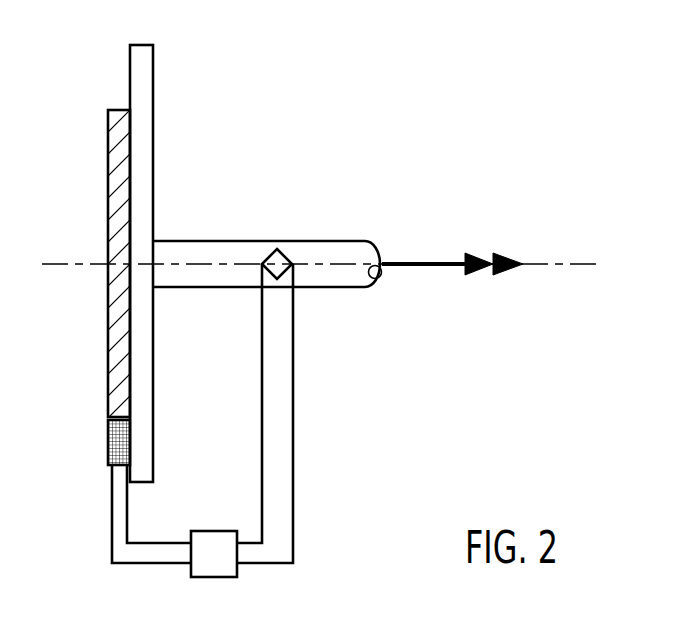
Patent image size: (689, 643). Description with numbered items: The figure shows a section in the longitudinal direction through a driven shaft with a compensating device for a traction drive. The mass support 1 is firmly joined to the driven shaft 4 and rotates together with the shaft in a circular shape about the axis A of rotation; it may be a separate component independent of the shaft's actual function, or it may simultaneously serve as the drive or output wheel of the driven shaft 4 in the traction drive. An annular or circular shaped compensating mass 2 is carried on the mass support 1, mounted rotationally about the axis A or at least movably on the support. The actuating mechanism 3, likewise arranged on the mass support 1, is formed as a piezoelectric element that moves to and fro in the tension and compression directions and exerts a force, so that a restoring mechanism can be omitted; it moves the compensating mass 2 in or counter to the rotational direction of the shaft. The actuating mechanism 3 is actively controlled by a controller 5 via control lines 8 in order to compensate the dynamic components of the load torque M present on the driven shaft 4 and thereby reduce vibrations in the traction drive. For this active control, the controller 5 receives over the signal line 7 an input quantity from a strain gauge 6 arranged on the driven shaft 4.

The mass support 1 is at (147, 62).
The compensating mass 2 is at (112, 137).
The actuating mechanism 3 is at (112, 440).
The driven shaft 4 is at (343, 250).
The controller 5 is at (222, 575).
The strain gauge 6 is at (275, 250).
The signal line 7 is at (293, 437).
The control lines 8 is at (112, 519).
The axis of rotation A is at (52, 262).
The load torque M is at (443, 265).